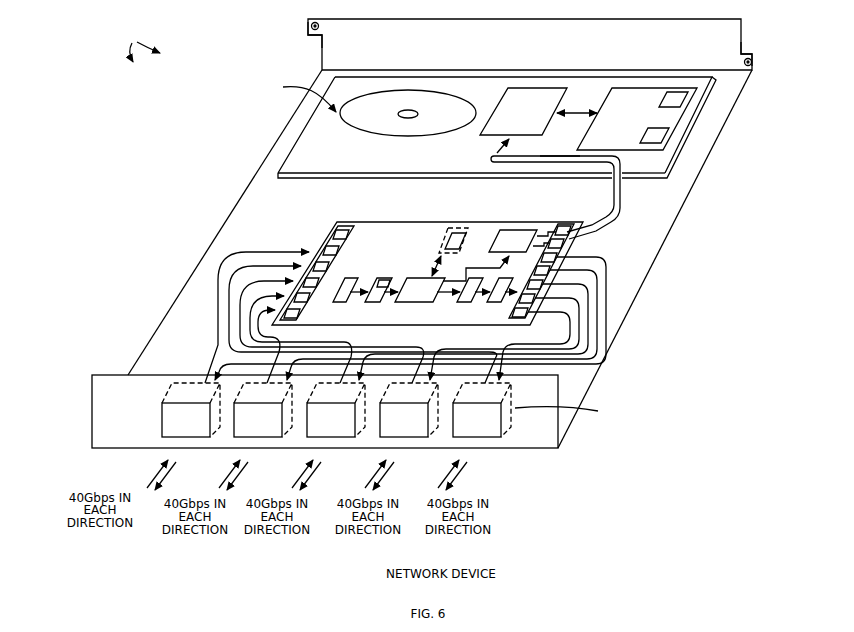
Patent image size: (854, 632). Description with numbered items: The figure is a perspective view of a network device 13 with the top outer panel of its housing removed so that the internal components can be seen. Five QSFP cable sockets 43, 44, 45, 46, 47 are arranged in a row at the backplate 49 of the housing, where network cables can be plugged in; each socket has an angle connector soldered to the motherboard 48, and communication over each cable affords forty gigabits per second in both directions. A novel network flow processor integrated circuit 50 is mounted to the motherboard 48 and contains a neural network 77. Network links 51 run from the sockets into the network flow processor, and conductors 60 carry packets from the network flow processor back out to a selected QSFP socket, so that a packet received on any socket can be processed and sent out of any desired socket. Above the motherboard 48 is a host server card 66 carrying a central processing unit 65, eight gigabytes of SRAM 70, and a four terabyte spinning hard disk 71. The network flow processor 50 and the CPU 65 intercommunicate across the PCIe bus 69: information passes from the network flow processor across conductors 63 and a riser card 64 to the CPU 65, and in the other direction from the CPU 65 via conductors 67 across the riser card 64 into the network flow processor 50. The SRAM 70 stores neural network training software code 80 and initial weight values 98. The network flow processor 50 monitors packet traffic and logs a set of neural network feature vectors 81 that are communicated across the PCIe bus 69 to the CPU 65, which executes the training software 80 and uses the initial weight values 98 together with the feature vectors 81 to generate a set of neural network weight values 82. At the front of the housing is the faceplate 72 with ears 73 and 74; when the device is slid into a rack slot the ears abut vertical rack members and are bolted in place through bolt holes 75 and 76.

The network device 13 is at (141, 45).
The QSFP cable socket 43 is at (183, 399).
The QSFP cable socket 44 is at (255, 399).
The QSFP cable socket 45 is at (328, 399).
The QSFP cable socket 46 is at (401, 399).
The QSFP cable socket 47 is at (474, 399).
The motherboard 48 is at (636, 289).
The backplate 49 is at (92, 410).
The network flow processor integrated circuit 50 is at (427, 256).
The network links from sockets to NFP 51 is at (233, 297).
The conductors 60 is at (584, 318).
The conductors 63 is at (556, 176).
The riser card 64 is at (620, 182).
The central processing unit 65 is at (533, 104).
The host server card 66 is at (293, 144).
The conductors 67 is at (556, 156).
The PCIe bus 69 is at (492, 156).
The SRAM 70 is at (611, 89).
The spinning hard disk 71 is at (401, 106).
The faceplate 72 is at (506, 61).
The ear 73 is at (311, 38).
The ear 74 is at (752, 57).
The bolt hole 75 is at (311, 26).
The bolt hole 76 is at (755, 62).
The neural network 77 is at (339, 249).
The neural network training software code 80 is at (686, 99).
The neural network feature vectors 81 is at (608, 211).
The neural network weight values 82 is at (609, 226).
The initial weight values 98 is at (663, 138).